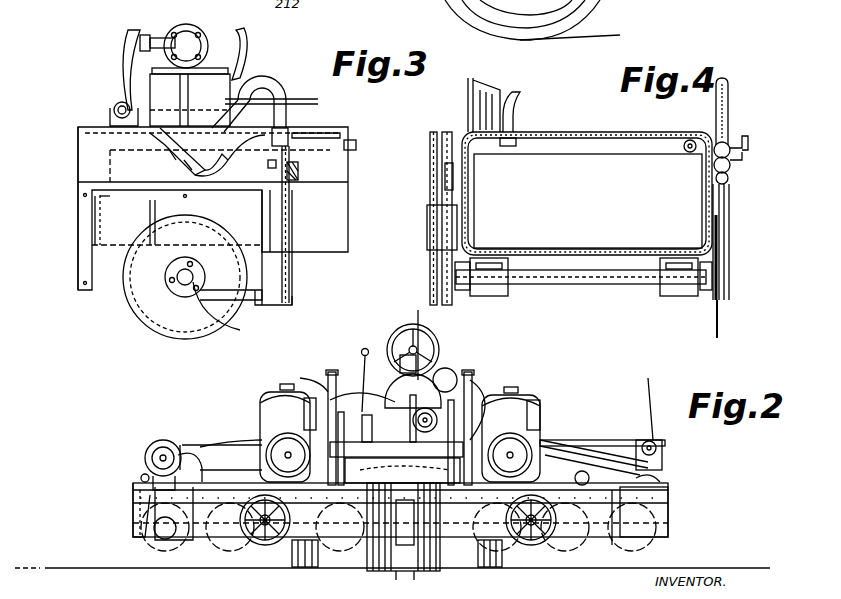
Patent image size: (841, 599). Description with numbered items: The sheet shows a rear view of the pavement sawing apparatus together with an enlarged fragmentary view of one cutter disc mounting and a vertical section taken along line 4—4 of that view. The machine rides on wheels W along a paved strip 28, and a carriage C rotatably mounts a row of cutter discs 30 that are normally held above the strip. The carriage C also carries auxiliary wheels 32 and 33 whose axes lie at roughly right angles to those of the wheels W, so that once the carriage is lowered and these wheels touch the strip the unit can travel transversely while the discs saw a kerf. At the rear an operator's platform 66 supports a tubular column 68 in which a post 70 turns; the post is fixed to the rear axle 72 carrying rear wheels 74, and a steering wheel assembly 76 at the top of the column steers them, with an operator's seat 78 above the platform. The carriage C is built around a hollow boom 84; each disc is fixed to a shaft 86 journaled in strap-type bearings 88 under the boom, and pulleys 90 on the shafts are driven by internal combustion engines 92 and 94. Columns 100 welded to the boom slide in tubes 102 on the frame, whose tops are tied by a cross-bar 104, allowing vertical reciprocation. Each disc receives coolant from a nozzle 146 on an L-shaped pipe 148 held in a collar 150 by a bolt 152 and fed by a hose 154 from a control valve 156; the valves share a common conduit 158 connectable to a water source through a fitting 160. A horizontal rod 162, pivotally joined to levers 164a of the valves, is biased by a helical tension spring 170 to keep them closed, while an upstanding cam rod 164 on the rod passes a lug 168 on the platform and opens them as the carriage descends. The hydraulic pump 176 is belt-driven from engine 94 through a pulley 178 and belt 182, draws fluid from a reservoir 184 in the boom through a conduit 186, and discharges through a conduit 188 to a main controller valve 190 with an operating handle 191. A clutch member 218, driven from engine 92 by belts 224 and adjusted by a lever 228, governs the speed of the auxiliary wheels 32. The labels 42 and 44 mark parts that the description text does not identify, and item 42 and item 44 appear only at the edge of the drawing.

In FIG. 2, the paved strip 28 is at (78, 560).
In FIG. 3, the cutter discs 30 is at (155, 325).
In FIG. 4, the cutter discs 30 is at (716, 336).
In FIG. 2, the cutter discs 30 is at (150, 538).
In FIG. 2, the auxiliary wheels 32 is at (534, 548).
In FIG. 2, the auxiliary wheels 33 is at (262, 547).
In FIG. 4, the tire 42 is at (579, 20).
In FIG. 4, the drum 44 is at (448, 4).
In FIG. 2, the drum 44 is at (306, 568).
In FIG. 2, the operator's platform 66 is at (348, 512).
In FIG. 2, the tubular column 68 is at (372, 392).
In FIG. 2, the post 70 is at (402, 470).
In FIG. 2, the rear axle 72 is at (403, 527).
In FIG. 2, the wheels 74 is at (396, 572).
In FIG. 2, the steering wheel assembly 76 is at (392, 334).
In FIG. 2, the operator's seat 78 is at (400, 388).
In FIG. 3, the boom 84 is at (213, 208).
In FIG. 4, the boom 84 is at (582, 134).
In FIG. 2, the boom 84 is at (133, 497).
In FIG. 3, the shaft 86 is at (190, 268).
In FIG. 4, the shaft 86 is at (595, 284).
In FIG. 4, the strap-type bearings 88 is at (504, 296).
In FIG. 4, the pulleys 90 is at (428, 288).
In FIG. 2, the internal combustion engine 92 is at (542, 396).
In FIG. 2, the internal combustion engine 94 is at (260, 392).
In FIG. 2, the upstanding columns 100 is at (328, 390).
In FIG. 2, the tubes 102 is at (304, 412).
In FIG. 2, the horizontal cross-bar 104 is at (398, 445).
In FIG. 3, the nozzle 146 is at (40, 4).
In FIG. 4, the nozzle 146 is at (730, 304).
In FIG. 2, the nozzle 146 is at (170, 548).
In FIG. 3, the L-shaped pipe 148 is at (292, 212).
In FIG. 3, the collar 150 is at (300, 168).
In FIG. 3, the bolt 152 is at (272, 190).
In FIG. 3, the hose 154 is at (268, 82).
In FIG. 4, the hose 154 is at (743, 127).
In FIG. 2, the hose 154 is at (232, 480).
In FIG. 3, the control valve 156 is at (175, 163).
In FIG. 4, the control valve 156 is at (732, 172).
In FIG. 3, the common conduit 158 is at (354, 140).
In FIG. 4, the common conduit 158 is at (684, 152).
In FIG. 3, the fitting 160 is at (114, 110).
In FIG. 2, the fitting 160 is at (140, 478).
In FIG. 3, the horizontal rod 162 is at (318, 125).
In FIG. 4, the horizontal rod 162 is at (748, 134).
In FIG. 2, the horizontal rod 162 is at (566, 470).
In FIG. 2, the cam rod 164 is at (478, 400).
In FIG. 3, the levers 164a is at (262, 165).
In FIG. 4, the levers 164a is at (744, 154).
In FIG. 2, the post 168 is at (338, 368).
In FIG. 2, the helical tension spring 170 is at (612, 545).
In FIG. 2, the pump 176 is at (165, 446).
In FIG. 2, the pulley 178 is at (152, 452).
In FIG. 2, the belt 182 is at (210, 446).
In FIG. 4, the reservoir 184 is at (587, 193).
In FIG. 4, the conduit 186 is at (520, 118).
In FIG. 2, the conduit 186 is at (150, 465).
In FIG. 2, the conduit 188 is at (196, 445).
In FIG. 2, the main controller valve 190 is at (295, 378).
In FIG. 2, the operating handle 191 is at (356, 352).
In FIG. 2, the clutch member 218 is at (670, 464).
In FIG. 2, the belts 224 is at (606, 440).
In FIG. 2, the lever 228 is at (637, 405).
In FIG. 4, the wheels W is at (590, 6).
In FIG. 2, the carriage C is at (678, 494).
In FIG. 3, the section line 4 is at (172, 116).